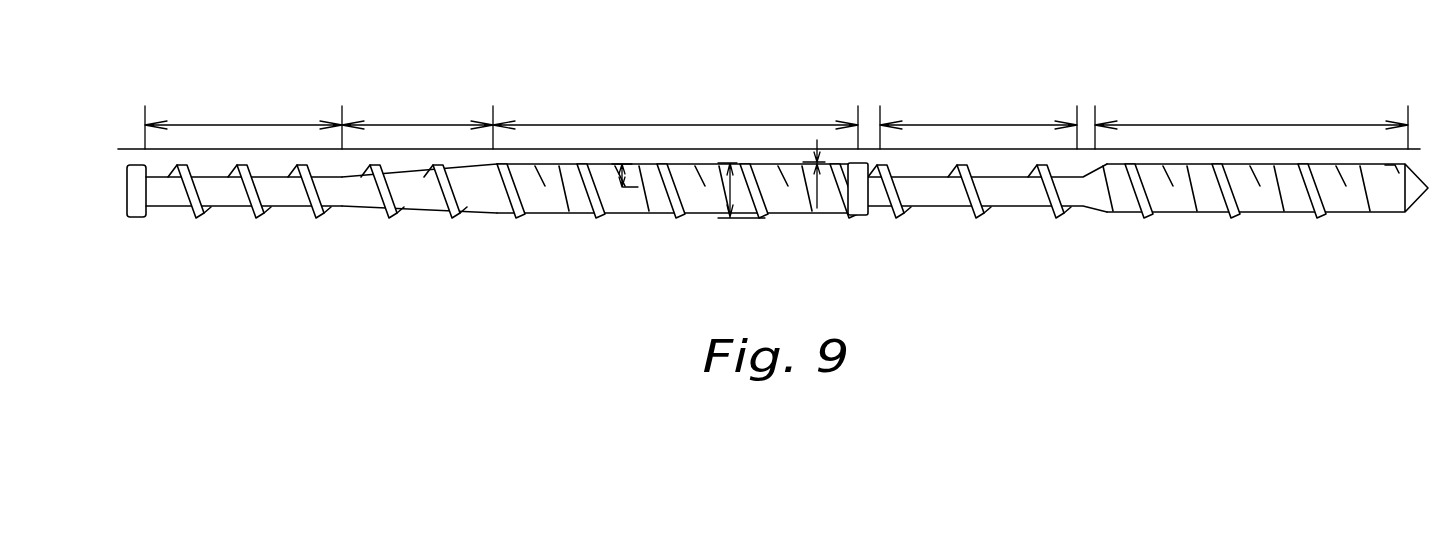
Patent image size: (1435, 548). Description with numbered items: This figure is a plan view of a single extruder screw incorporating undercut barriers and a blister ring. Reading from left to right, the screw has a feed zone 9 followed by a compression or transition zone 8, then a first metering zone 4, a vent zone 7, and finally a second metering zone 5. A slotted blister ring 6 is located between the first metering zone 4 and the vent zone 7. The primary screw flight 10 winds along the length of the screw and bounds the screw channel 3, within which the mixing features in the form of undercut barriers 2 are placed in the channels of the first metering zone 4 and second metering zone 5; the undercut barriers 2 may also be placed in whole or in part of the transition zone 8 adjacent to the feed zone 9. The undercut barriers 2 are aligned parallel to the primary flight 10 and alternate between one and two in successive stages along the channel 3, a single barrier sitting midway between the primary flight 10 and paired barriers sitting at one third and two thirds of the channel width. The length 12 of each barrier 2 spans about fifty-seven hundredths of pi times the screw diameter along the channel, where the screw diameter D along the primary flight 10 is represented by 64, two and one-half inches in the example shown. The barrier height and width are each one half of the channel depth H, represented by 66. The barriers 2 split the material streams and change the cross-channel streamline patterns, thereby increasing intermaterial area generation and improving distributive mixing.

The undercut barrier 2 is at (538, 190).
The screw channel 3 is at (480, 200).
The first metering zone 4 is at (675, 121).
The second metering zone 5 is at (1261, 121).
The slotted blister ring 6 is at (857, 212).
The vent zone 7 is at (987, 129).
The transition zone 8 is at (417, 104).
The feed zone 9 is at (243, 122).
The primary screw flight 10 is at (453, 217).
The length of undercut barrier 12 is at (637, 168).
The screw diameter 64 is at (730, 193).
The channel depth 66 is at (817, 142).